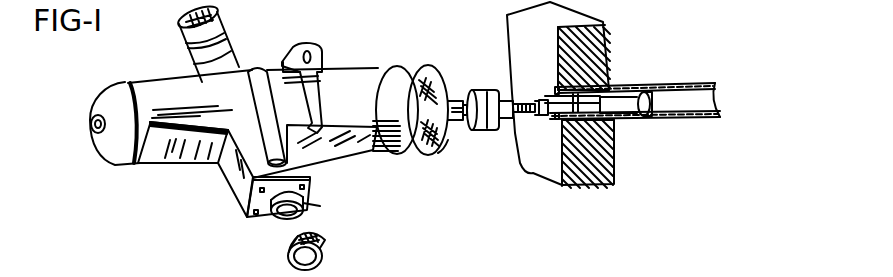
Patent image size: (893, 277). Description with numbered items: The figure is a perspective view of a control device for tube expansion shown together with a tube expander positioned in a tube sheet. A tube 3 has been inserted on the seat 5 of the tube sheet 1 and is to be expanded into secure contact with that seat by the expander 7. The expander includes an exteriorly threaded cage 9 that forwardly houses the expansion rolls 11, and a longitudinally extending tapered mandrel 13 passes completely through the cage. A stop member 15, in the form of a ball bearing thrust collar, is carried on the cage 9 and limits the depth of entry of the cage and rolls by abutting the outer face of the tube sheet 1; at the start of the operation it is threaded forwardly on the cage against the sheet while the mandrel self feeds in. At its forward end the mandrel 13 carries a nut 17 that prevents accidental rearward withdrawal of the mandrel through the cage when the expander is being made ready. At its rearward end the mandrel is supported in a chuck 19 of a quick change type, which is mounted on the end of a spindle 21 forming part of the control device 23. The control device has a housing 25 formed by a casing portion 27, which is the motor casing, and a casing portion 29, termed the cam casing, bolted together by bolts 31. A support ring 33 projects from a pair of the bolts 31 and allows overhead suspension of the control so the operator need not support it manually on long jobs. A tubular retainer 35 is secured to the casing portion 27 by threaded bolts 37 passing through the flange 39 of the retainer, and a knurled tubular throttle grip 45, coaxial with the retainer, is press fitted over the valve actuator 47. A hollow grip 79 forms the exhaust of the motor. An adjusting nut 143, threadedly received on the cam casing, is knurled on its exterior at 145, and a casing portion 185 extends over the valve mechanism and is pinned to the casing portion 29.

The tube sheet 1 is at (597, 58).
The tube 3 is at (713, 88).
The seat 5 is at (600, 90).
The expander 7 is at (647, 78).
The cage 9 is at (523, 120).
The expansion rolls 11 is at (577, 118).
The mandrel 13 is at (618, 123).
The stop member 15 is at (490, 93).
The nut 17 is at (673, 120).
The chuck 19 is at (462, 122).
The spindle 21 is at (443, 145).
The control device 23 is at (375, 68).
The housing 25 is at (271, 66).
The casing portion 27 is at (136, 92).
The casing portion 29 is at (350, 72).
The bolts 31 is at (315, 151).
The support ring 33 is at (318, 47).
The retainer 35 is at (270, 220).
The bolts 37 is at (238, 190).
The flange 39 is at (247, 215).
The throttle grip 45 is at (322, 228).
The valve actuator 47 is at (307, 207).
The grip 79 is at (208, 26).
The adjusting nut 143 is at (374, 152).
The knurled surface 145 is at (418, 70).
The casing portion 185 is at (342, 192).